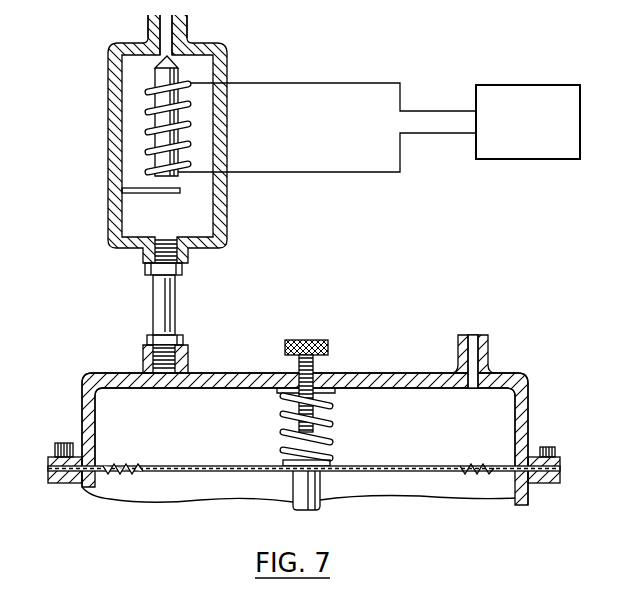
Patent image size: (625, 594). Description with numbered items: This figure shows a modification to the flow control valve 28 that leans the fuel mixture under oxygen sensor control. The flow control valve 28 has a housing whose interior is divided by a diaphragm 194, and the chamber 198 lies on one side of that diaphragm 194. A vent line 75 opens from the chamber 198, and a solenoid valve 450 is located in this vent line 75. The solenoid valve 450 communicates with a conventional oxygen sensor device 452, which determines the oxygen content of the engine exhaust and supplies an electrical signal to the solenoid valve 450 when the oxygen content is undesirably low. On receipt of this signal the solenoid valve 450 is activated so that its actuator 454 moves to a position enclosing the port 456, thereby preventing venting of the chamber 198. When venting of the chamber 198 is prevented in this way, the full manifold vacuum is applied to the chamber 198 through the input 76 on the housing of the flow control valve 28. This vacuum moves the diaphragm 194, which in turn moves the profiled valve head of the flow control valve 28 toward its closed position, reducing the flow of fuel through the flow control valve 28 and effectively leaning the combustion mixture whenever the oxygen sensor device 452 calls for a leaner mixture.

The flow control valve 28 is at (540, 396).
The vent line 75 is at (162, 307).
The input 76 is at (462, 347).
The diaphragm 194 is at (223, 466).
The chamber 198 is at (430, 436).
The solenoid valve 450 is at (238, 187).
The oxygen sensor device 452 is at (549, 135).
The actuator 454 is at (157, 72).
The port 456 is at (162, 46).